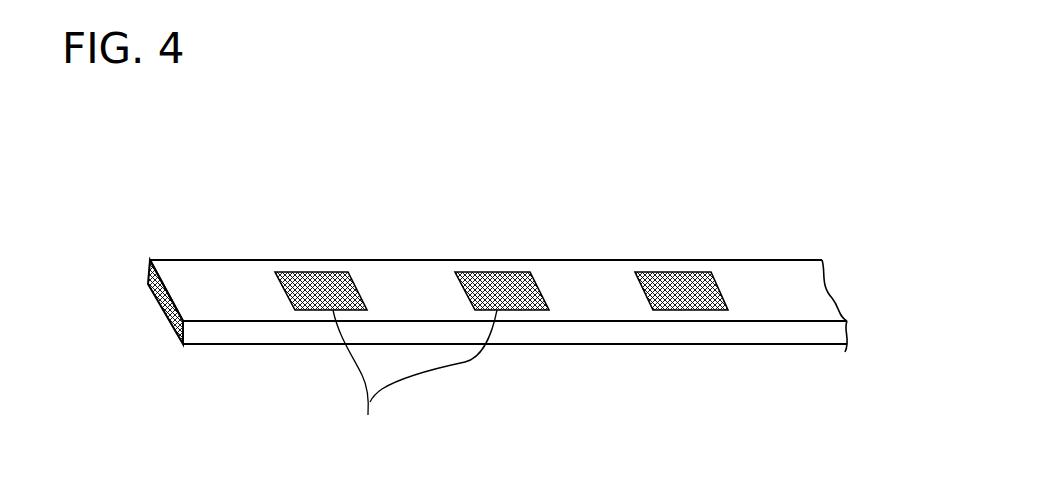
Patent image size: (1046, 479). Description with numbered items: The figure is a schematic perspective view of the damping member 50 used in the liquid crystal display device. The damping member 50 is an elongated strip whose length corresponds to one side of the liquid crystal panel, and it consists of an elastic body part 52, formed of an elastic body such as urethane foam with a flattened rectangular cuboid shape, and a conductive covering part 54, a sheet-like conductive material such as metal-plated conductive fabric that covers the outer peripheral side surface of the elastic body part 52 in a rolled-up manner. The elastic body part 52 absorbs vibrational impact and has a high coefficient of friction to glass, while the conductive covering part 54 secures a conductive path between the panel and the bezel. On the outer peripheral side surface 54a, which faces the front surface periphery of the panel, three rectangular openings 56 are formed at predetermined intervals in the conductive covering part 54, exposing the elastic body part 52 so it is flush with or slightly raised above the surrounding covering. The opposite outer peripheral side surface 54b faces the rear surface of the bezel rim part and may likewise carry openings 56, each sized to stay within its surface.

The damping member 50 is at (469, 258).
The elastic body part 52 is at (315, 277).
The conductive covering part 54 is at (500, 312).
The outer peripheral side surface 54a is at (790, 290).
The outer peripheral side surface 54b is at (783, 347).
The openings 56 is at (415, 381).